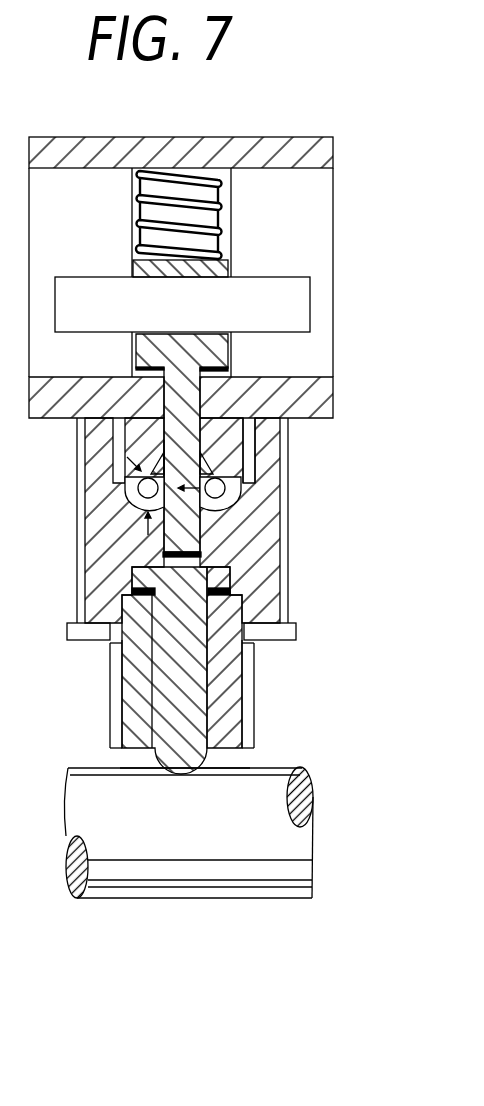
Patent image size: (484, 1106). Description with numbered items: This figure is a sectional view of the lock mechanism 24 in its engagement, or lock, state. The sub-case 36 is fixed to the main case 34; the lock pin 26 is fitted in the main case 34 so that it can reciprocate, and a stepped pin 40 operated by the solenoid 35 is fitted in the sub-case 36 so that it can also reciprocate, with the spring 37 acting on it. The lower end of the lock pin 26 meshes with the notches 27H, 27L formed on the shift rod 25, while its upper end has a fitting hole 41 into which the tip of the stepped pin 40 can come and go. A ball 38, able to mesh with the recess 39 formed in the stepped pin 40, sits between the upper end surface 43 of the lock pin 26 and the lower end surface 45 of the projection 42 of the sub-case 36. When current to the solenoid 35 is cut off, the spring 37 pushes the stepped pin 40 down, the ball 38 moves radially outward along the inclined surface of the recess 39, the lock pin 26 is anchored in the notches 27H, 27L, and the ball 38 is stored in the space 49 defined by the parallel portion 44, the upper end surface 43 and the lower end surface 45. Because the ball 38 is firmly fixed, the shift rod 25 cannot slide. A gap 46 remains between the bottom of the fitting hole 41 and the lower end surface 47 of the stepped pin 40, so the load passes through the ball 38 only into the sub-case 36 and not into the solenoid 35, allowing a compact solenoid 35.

The lock mechanism 24 is at (340, 196).
The shift rod 25 is at (250, 784).
The lock pin 26 is at (187, 672).
The notch 27H is at (198, 772).
The notch 27L is at (178, 838).
The main case 34 is at (252, 548).
The solenoid 35 is at (290, 294).
The sub-case 36 is at (93, 137).
The spring 37 is at (221, 202).
The ball 38 is at (226, 496).
The recess 39 is at (230, 520).
The stepped pin 40 is at (187, 396).
The fitting hole 41 is at (140, 518).
The projection 42 is at (215, 456).
The upper end surface 43 is at (136, 492).
The parallel portion 44 is at (205, 440).
The lower end surface 45 is at (146, 461).
The gap 46 is at (228, 583).
The lower end surface 47 is at (170, 554).
The space 49 is at (163, 456).